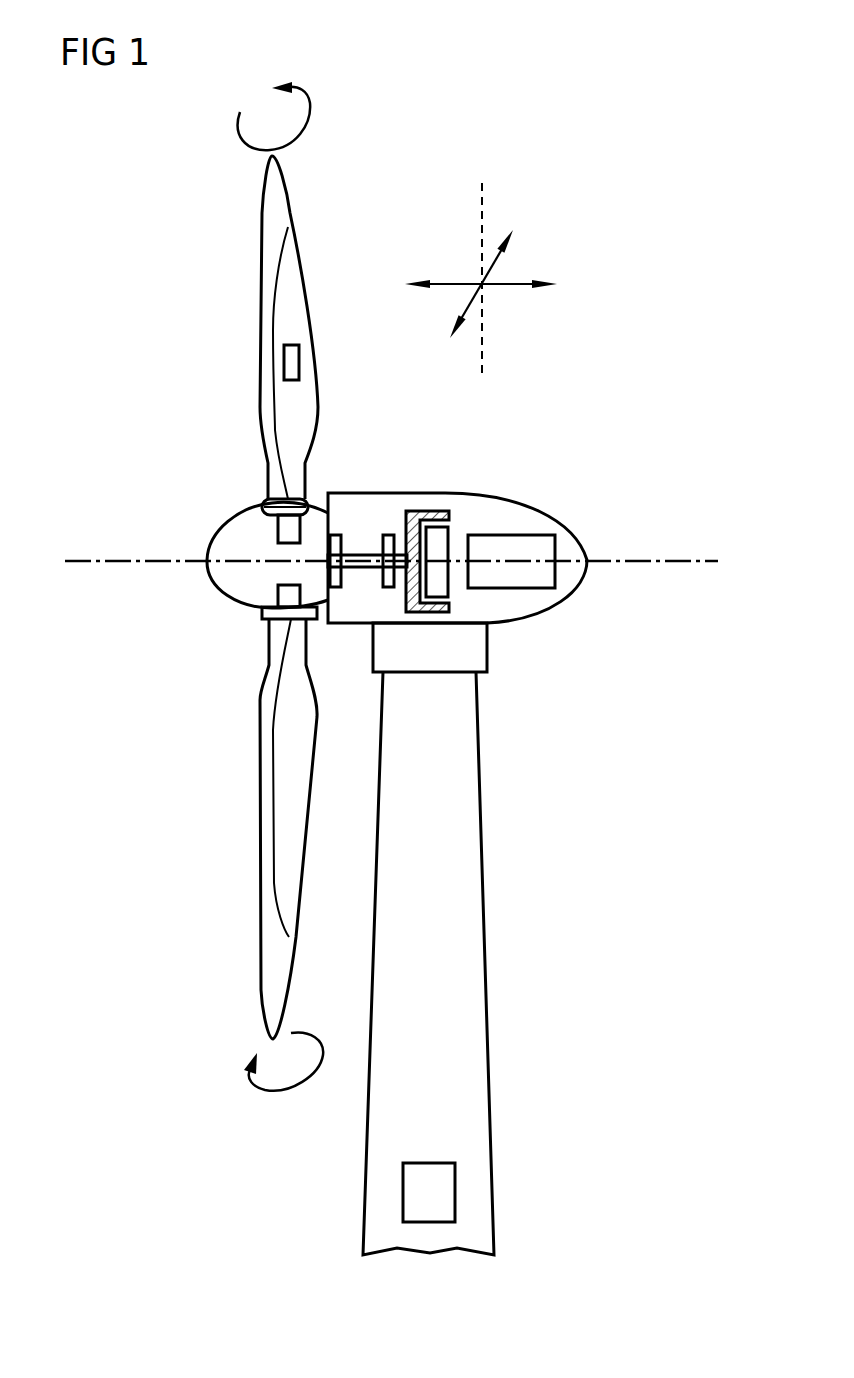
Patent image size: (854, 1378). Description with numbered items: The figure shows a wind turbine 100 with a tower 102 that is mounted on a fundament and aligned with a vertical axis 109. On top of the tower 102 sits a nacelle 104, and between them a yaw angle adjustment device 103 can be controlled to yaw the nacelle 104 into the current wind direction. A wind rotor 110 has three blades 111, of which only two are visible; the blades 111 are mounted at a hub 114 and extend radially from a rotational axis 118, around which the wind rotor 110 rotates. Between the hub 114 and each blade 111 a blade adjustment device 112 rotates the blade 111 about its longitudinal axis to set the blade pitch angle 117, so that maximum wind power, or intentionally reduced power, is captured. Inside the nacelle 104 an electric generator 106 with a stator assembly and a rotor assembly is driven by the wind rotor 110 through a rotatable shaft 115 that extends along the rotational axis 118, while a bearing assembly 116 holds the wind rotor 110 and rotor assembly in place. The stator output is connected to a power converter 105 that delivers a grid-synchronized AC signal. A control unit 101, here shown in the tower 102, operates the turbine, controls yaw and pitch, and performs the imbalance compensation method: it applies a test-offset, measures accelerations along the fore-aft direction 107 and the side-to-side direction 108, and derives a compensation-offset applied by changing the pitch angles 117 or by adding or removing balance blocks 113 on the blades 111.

The wind turbine 100 is at (670, 298).
The control unit 101 is at (430, 1163).
The tower 102 is at (477, 970).
The yaw angle adjustment device 103 is at (428, 658).
The nacelle 104 is at (583, 588).
The power converter 105 is at (510, 588).
The electric generator 106 is at (443, 538).
The fore-aft direction 107 is at (508, 287).
The side-to-side direction 108 is at (493, 272).
The vertical axis 109 is at (480, 205).
The wind rotor 110 is at (172, 458).
The blade 111 is at (263, 322).
The blade adjustment device 112 is at (263, 498).
The balance block 113 is at (300, 360).
The hub 114 is at (222, 573).
The rotatable shaft 115 is at (360, 562).
The bearing assembly 116 is at (389, 535).
The blade pitch angle 117 is at (292, 137).
The rotational axis 118 is at (118, 560).